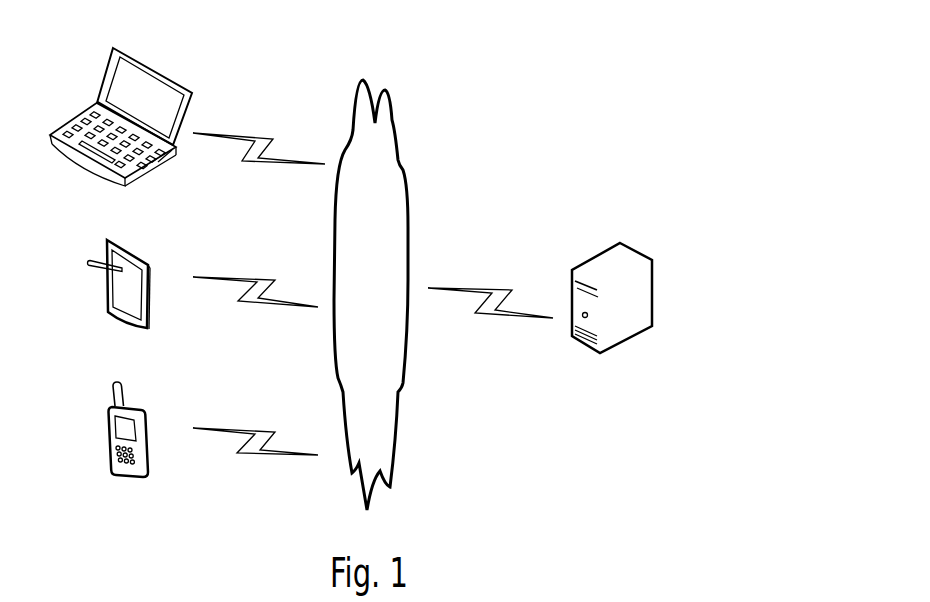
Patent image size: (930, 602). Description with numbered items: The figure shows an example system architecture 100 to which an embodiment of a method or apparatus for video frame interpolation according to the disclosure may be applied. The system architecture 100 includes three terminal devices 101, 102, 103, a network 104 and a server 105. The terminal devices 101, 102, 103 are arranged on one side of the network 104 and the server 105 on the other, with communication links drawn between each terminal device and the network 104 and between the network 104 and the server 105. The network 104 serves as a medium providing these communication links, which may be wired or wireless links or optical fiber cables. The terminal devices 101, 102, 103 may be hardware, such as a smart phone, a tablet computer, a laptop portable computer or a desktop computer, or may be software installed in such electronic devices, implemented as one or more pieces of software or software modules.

The system architecture 100 is at (619, 25).
The terminal device 101 is at (128, 447).
The terminal device 102 is at (119, 302).
The terminal device 103 is at (121, 134).
The network 104 is at (371, 295).
The server 105 is at (612, 315).